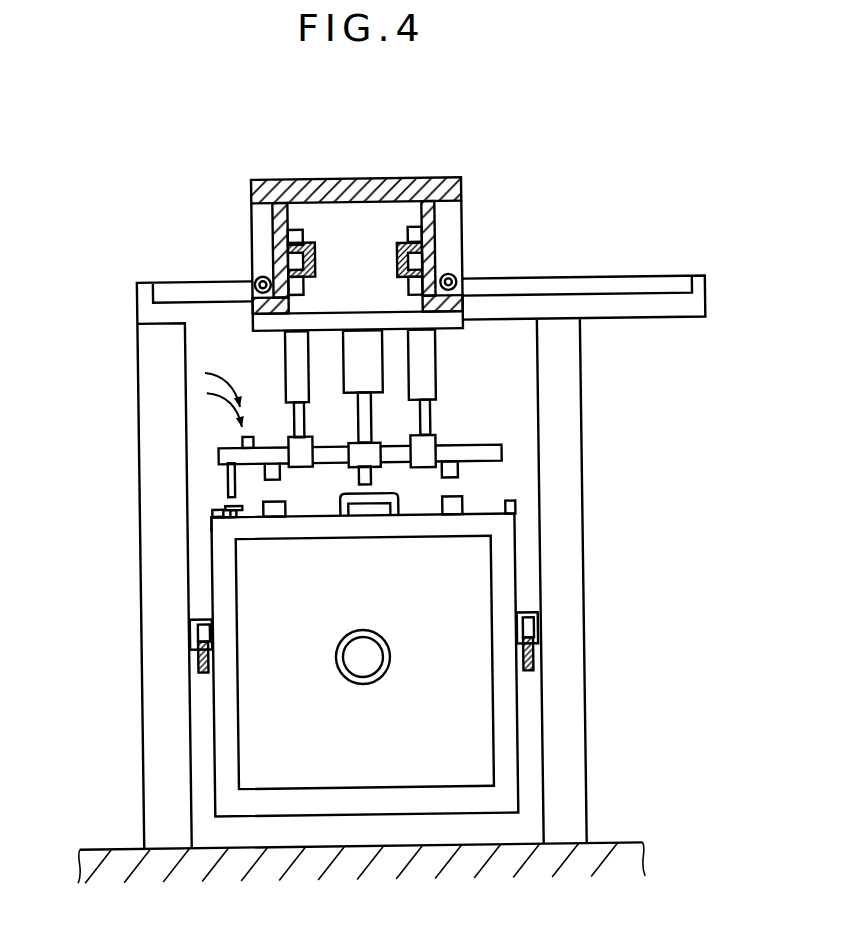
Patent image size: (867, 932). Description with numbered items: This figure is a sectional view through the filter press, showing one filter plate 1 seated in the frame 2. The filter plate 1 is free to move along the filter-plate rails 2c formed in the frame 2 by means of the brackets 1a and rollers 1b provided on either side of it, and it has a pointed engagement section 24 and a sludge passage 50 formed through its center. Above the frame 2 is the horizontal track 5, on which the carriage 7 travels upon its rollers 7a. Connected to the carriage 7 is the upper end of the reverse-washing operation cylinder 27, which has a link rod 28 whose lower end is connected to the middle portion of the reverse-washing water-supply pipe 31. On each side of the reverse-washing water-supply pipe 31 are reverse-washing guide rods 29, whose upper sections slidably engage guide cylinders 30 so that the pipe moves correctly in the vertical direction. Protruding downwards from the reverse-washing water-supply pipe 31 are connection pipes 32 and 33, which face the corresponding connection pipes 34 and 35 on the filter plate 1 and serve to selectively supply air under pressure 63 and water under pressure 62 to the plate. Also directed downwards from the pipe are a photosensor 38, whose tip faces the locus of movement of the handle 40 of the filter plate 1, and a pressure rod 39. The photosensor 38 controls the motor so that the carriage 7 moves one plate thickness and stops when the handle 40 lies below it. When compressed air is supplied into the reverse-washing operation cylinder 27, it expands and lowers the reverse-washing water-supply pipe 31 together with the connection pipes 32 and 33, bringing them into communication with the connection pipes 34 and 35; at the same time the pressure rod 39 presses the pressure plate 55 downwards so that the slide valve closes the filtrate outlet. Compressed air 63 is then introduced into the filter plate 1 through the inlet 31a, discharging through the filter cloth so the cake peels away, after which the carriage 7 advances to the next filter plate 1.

The filter plate 1 is at (515, 704).
The bracket 1a is at (526, 615).
The roller 1b is at (531, 630).
The frame 2 is at (583, 610).
The filter-plate rail 2c is at (532, 657).
The horizontal track 5 is at (397, 263).
The carriage 7 is at (427, 178).
The roller 7a is at (290, 282).
The pointed engagement section 24 is at (518, 512).
The reverse-washing operation cylinder 27 is at (385, 355).
The link rod 28 is at (439, 410).
The reverse-washing guide rod 29 is at (434, 423).
The guide cylinder 30 is at (438, 374).
The reverse-washing water-supply pipe 31 is at (476, 447).
The inlet 31a is at (219, 444).
The connection pipe 32 is at (214, 504).
The connection pipe 33 is at (461, 471).
The connection pipe 34 is at (278, 512).
The connection pipe 35 is at (456, 509).
The photosensor 38 is at (358, 477).
The pressure rod 39 is at (227, 478).
The handle 40 is at (363, 510).
The sludge passage 50 is at (335, 657).
The pressure plate 55 is at (212, 518).
The water under pressure 62 is at (209, 391).
The air under pressure 63 is at (208, 370).